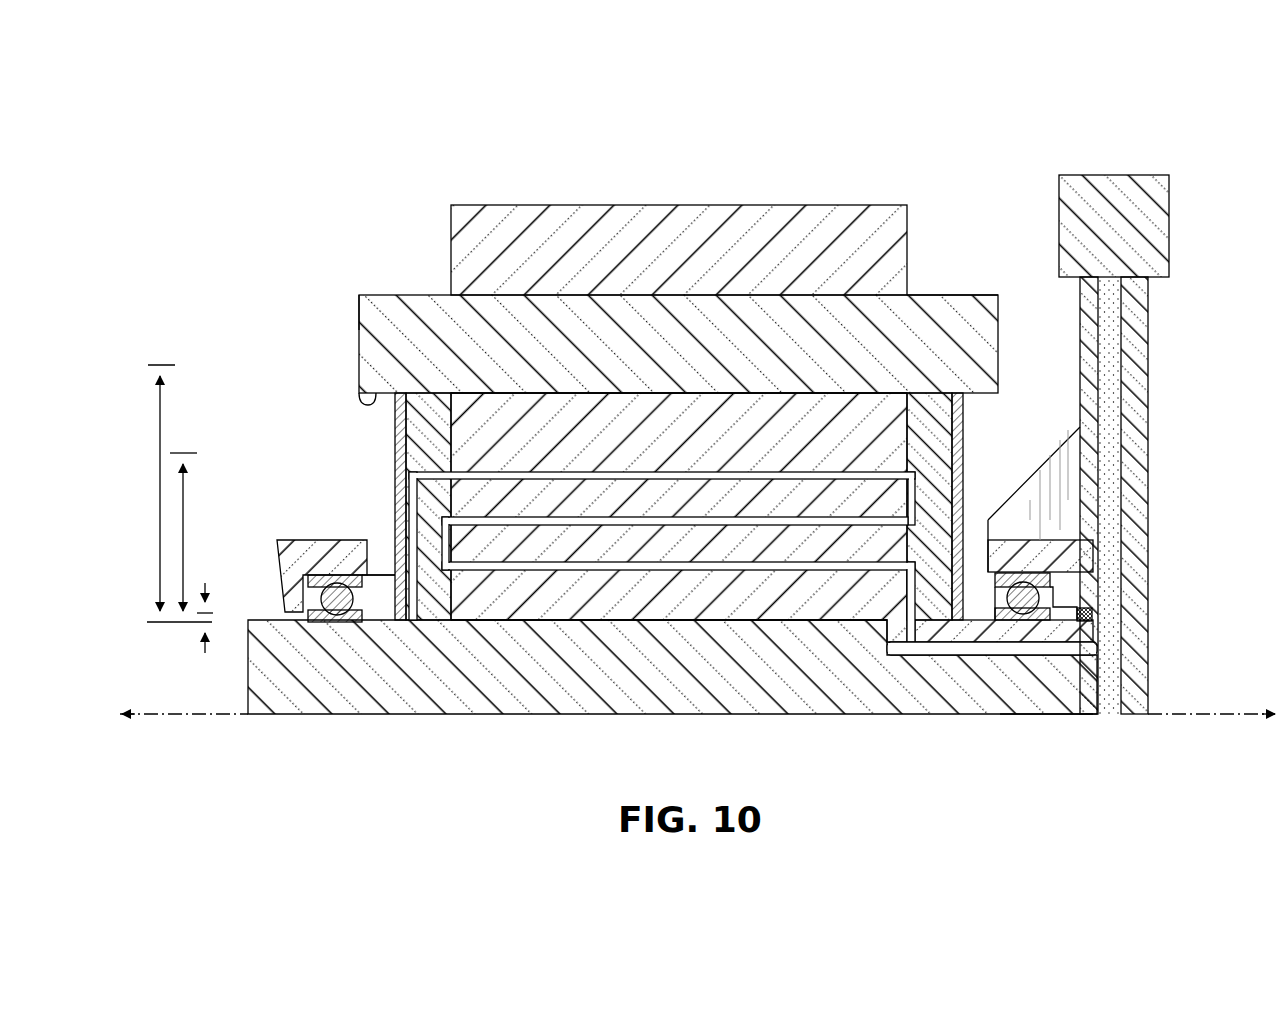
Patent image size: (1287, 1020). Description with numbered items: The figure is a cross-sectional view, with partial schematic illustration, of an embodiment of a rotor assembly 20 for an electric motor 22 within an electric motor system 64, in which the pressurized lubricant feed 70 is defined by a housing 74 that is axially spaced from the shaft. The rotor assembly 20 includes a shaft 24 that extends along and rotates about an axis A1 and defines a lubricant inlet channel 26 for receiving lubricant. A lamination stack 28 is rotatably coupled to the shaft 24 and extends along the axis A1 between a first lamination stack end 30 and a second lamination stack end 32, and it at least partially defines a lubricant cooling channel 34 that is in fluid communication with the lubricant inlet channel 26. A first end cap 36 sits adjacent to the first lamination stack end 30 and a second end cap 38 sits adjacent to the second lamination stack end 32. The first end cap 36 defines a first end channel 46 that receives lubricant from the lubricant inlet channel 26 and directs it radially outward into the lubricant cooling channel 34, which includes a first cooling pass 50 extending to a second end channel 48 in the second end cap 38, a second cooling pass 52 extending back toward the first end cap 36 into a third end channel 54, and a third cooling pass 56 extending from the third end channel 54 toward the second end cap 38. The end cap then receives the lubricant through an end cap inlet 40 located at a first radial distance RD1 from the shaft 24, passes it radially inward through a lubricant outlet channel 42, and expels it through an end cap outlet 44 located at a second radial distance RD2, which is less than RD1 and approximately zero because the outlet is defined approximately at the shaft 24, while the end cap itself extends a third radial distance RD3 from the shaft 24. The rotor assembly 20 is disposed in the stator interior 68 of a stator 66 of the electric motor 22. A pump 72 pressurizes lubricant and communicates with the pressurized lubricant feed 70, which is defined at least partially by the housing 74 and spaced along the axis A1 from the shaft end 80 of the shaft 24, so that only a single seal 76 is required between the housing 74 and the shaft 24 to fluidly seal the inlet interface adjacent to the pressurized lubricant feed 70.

The rotor assembly 20 is at (315, 462).
The electric motor 22 is at (945, 173).
The shaft 24 is at (310, 713).
The lubricant inlet channel 26 is at (935, 655).
The lamination stack 28 is at (655, 430).
The first lamination stack end 30 is at (860, 445).
The second lamination stack end 32 is at (465, 415).
The lubricant cooling channel 34 is at (600, 600).
The first end cap 36 is at (925, 455).
The second end cap 38 is at (418, 423).
The end cap inlet 40 is at (420, 473).
The lubricant outlet channel 42 is at (409, 537).
The end cap outlet 44 is at (392, 625).
The first end channel 46 is at (908, 595).
The second end channel 48 is at (460, 540).
The first cooling pass 50 is at (820, 570).
The second cooling pass 52 is at (760, 522).
The third end channel 54 is at (912, 498).
The third cooling pass 56 is at (680, 480).
The electric motor system 64 is at (263, 216).
The stator 66 is at (945, 330).
The stator interior 68 is at (362, 404).
The pressurized lubricant feed 70 is at (1108, 402).
The pump 72 is at (1170, 232).
The housing 74 is at (1135, 498).
The seal 76 is at (1088, 612).
The shaft end 80 is at (1080, 680).
The first radial distance RD1 is at (186, 492).
The second radial distance RD2 is at (206, 583).
The third radial distance RD3 is at (163, 417).
The axis A1 is at (1250, 705).